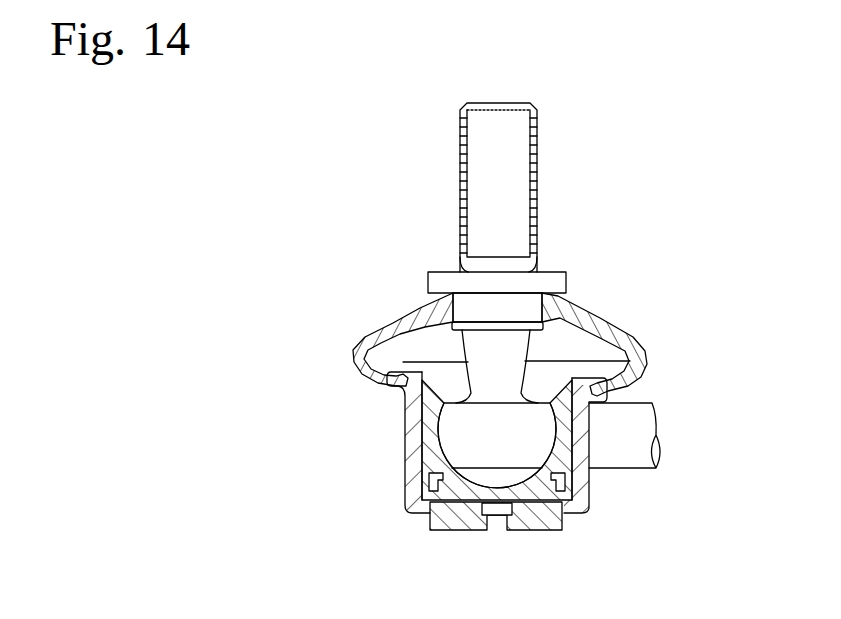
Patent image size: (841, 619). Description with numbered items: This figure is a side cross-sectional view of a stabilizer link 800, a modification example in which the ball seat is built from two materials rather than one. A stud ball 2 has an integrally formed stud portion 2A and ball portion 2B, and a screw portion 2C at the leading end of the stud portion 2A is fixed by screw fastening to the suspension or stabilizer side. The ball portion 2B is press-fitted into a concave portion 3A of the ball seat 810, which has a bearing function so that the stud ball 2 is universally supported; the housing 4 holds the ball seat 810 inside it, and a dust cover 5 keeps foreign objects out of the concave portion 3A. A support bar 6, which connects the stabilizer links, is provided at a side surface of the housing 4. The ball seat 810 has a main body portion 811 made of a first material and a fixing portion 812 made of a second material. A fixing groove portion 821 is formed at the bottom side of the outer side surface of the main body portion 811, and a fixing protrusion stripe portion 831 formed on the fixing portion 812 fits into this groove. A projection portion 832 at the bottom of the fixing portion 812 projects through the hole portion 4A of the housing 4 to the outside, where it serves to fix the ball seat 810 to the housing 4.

The stabilizer link 800 is at (688, 154).
The stud ball 2 is at (538, 197).
The stud portion 2A is at (478, 178).
The ball portion 2B is at (510, 457).
The screw portion 2C is at (533, 138).
The concave portion 3A is at (545, 381).
The housing 4 is at (417, 463).
The hole portion 4A is at (443, 520).
The dust cover 5 is at (391, 332).
The support bar 6 is at (637, 458).
The housing upper lip 810 is at (418, 413).
The main body portion 811 is at (563, 421).
The fixing portion 812 is at (571, 532).
The fixing groove portion 821 is at (566, 480).
The fixing protrusion stripe portion 831 is at (428, 489).
The projection portion 832 is at (485, 518).